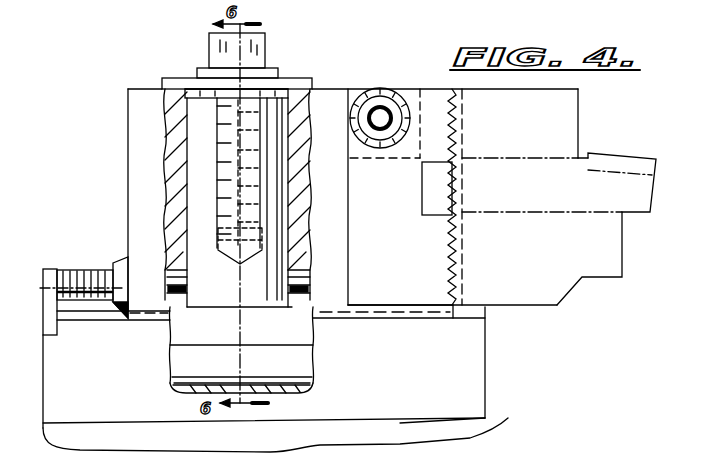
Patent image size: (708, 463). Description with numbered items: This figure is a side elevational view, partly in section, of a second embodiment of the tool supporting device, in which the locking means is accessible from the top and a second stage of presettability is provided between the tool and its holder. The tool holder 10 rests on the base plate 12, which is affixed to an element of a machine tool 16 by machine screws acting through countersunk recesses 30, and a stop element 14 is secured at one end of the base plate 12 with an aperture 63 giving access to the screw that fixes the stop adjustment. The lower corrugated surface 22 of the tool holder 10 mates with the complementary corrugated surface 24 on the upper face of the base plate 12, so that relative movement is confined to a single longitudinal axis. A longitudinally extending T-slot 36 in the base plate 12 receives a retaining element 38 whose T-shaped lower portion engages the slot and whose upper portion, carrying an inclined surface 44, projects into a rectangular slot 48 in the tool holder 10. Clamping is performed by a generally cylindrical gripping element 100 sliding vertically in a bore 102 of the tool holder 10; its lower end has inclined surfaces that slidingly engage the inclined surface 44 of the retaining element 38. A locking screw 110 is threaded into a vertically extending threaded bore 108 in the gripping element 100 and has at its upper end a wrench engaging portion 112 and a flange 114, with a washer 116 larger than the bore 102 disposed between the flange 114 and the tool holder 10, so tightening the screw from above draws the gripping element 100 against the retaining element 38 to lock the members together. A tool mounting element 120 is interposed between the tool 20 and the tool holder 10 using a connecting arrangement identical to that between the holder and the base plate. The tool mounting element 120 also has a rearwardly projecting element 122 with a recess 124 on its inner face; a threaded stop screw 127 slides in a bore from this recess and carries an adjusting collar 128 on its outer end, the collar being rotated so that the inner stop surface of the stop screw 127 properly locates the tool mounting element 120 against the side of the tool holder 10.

The tool holder 10 is at (128, 104).
The base plate 12 is at (480, 358).
The stop element 14 is at (48, 268).
The element of a machine tool 16 is at (497, 423).
The cut-off tool 20 is at (620, 160).
The corrugated surface 22 is at (392, 321).
The complementary corrugated surface 24 is at (497, 318).
The countersunk recess 30 is at (113, 262).
The T-slot 36 is at (173, 386).
The retaining element 38 is at (252, 335).
The inclined surface 44 is at (311, 290).
The rectangular slot 48 is at (305, 277).
The aperture 63 is at (76, 271).
The gripping element 100 is at (250, 293).
The bore 102 is at (185, 125).
The threaded bore 108 is at (289, 192).
The locking screw 110 is at (292, 170).
The wrench engaging portion 112 is at (209, 42).
The flange 114 is at (197, 73).
The washer 116 is at (162, 84).
The tool mounting element 120 is at (583, 112).
The rearwardly projecting element 122 is at (396, 238).
The recess 124 is at (420, 92).
The stop screw 127 is at (380, 108).
The adjusting collar 128 is at (380, 150).